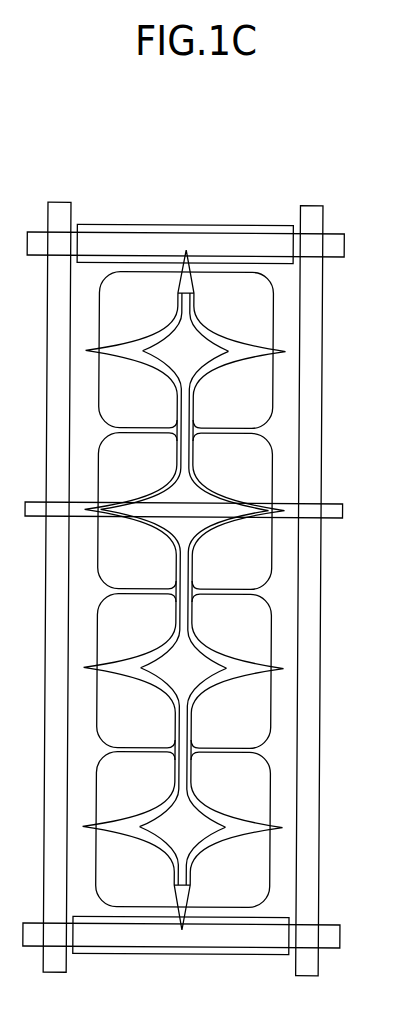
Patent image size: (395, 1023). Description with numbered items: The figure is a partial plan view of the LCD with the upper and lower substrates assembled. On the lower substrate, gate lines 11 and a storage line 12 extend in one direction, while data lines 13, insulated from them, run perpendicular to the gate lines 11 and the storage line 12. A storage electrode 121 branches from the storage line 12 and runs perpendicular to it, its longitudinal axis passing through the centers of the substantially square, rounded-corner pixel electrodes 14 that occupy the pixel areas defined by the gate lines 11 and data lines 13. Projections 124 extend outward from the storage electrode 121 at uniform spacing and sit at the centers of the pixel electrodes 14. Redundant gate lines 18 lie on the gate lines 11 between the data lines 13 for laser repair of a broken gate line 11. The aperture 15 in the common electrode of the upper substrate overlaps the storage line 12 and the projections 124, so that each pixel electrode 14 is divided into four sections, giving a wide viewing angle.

The gate line 11 is at (250, 233).
The storage line 12 is at (342, 510).
The data line 13 is at (47, 366).
The pixel electrode 14 is at (272, 394).
The aperture 15 is at (182, 762).
The redundant gate line 18 is at (142, 225).
The storage electrode 121 is at (190, 718).
The projection 124 is at (198, 338).